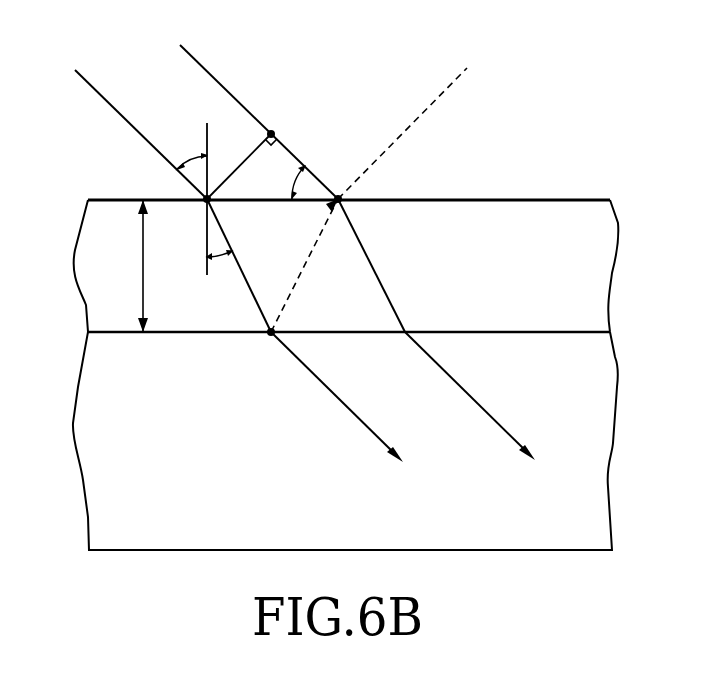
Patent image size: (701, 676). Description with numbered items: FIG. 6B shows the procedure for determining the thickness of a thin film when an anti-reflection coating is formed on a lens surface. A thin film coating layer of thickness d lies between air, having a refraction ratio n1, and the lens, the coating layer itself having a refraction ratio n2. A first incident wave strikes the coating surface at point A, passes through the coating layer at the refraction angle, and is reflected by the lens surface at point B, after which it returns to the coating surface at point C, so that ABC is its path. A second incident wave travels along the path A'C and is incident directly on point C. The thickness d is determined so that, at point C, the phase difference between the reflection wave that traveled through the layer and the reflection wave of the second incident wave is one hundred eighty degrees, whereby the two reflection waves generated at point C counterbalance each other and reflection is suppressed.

The refraction ratio of air n1 is at (349, 180).
The refraction ratio of the coating layer n2 is at (349, 284).
The point A is at (197, 212).
The point A' is at (278, 124).
The point B is at (264, 345).
The point C is at (316, 197).
The thickness of the coating layer d is at (136, 266).